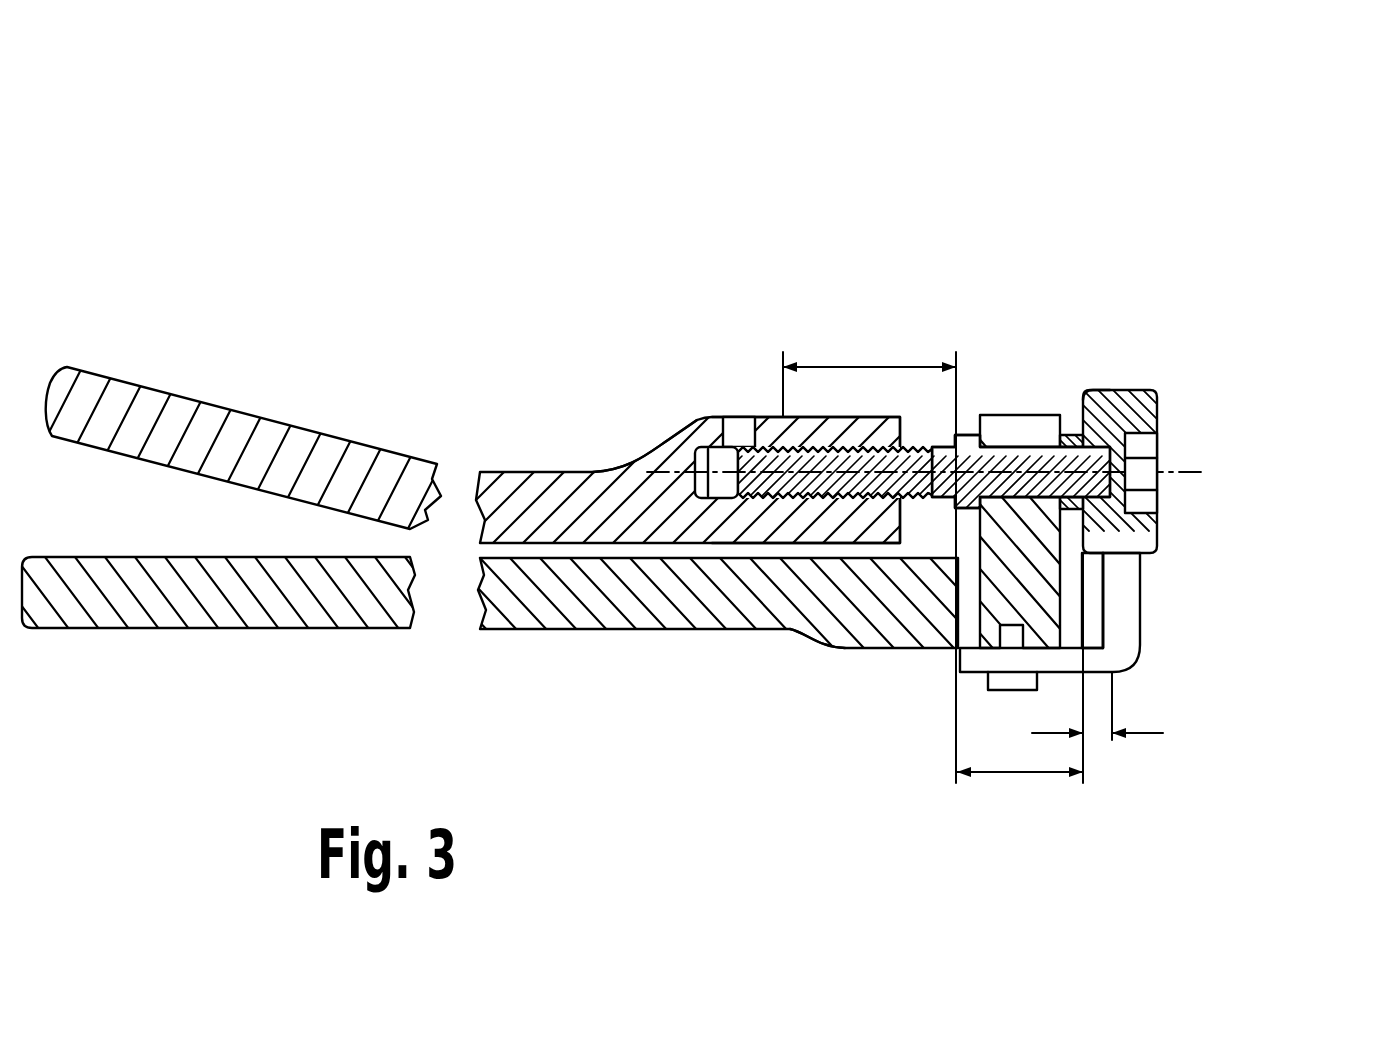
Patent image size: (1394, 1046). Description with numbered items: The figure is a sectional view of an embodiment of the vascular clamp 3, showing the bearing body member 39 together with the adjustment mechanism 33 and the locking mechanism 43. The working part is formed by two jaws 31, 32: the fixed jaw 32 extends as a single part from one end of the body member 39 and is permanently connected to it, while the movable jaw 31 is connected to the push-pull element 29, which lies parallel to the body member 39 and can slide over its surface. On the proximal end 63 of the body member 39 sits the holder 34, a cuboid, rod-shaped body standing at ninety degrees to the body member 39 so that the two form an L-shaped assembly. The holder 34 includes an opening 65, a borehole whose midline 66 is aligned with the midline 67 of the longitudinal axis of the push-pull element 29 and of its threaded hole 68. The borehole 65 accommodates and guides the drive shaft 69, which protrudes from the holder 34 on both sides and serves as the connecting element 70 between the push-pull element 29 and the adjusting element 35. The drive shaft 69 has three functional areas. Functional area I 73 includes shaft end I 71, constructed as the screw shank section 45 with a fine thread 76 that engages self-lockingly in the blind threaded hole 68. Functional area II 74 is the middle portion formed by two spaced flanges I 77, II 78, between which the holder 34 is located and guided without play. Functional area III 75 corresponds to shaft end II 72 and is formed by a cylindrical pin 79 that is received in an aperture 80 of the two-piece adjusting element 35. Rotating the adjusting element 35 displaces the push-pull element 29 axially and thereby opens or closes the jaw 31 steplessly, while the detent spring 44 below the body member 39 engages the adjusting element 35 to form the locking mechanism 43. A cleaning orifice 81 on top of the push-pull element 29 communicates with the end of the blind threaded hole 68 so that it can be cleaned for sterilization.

The vascular clamp 3 is at (779, 451).
The push-pull element 29 is at (523, 492).
The jaw 31 is at (172, 415).
The jaw 32 is at (142, 612).
The adjustment mechanism 33 is at (992, 501).
The holder 34 is at (1025, 423).
The adjusting element 35 is at (1157, 403).
The body member 39 is at (515, 610).
The locking mechanism 43 is at (1254, 568).
The detent spring 44 is at (1130, 567).
The screw shank section 45 is at (805, 470).
The proximal end 63 is at (878, 633).
The opening 65 is at (1050, 440).
The midline 66 is at (1186, 472).
The midline 67 is at (667, 463).
The threaded hole 68 is at (718, 485).
The drive shaft 69 is at (838, 495).
The connecting element 70 is at (932, 414).
The shaft end I 71 is at (832, 470).
The shaft end II 72 is at (1097, 400).
The functional area I 73 is at (865, 365).
The functional area II 74 is at (1010, 772).
The functional area III 75 is at (1095, 735).
The fine thread 76 is at (805, 495).
The flange I 77 is at (904, 497).
The flange II 78 is at (1115, 560).
The cylindrical pin 79 is at (1157, 482).
The aperture 80 is at (1157, 520).
The cleaning orifice 81 is at (733, 432).